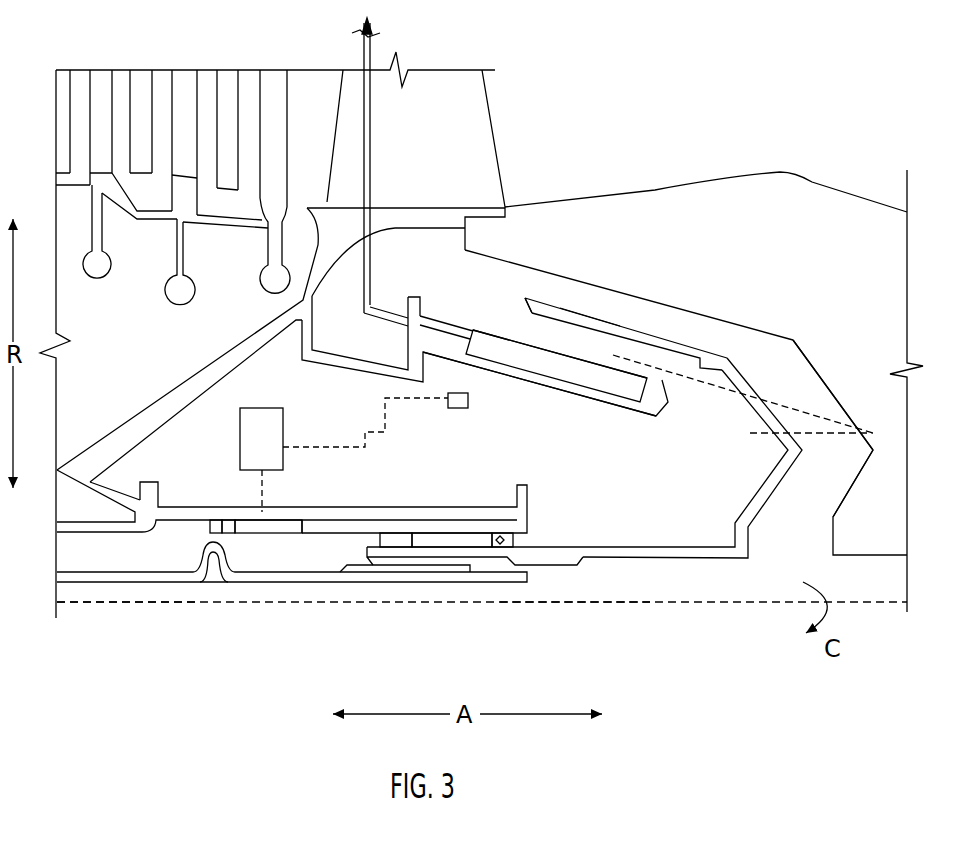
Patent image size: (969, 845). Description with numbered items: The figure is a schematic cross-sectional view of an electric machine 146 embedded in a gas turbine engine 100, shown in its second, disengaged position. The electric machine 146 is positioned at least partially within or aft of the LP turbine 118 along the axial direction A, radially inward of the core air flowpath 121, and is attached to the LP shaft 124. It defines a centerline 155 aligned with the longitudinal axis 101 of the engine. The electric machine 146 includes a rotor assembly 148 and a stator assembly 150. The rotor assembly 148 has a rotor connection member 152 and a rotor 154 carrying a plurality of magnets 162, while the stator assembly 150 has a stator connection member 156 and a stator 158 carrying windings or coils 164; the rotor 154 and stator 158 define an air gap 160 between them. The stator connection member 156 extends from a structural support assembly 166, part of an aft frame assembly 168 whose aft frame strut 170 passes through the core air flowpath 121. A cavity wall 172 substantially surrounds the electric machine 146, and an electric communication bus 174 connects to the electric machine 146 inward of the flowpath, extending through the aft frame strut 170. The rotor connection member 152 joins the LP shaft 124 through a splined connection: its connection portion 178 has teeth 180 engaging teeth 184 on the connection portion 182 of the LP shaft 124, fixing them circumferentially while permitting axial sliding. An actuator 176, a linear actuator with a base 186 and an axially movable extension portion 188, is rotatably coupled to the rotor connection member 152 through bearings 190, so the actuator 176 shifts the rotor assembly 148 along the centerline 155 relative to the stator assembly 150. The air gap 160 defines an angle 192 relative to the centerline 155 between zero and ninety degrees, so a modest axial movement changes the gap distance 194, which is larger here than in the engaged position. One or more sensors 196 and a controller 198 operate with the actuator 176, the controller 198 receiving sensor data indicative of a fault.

The gas turbine engine section 100 is at (614, 74).
The longitudinal axis 101 is at (167, 604).
The LP turbine 118 is at (206, 66).
The core air flowpath 121 is at (568, 165).
The LP shaft 124 is at (105, 583).
The electric machine 146 is at (720, 311).
The rotor assembly 148 is at (796, 369).
The stator assembly 150 is at (509, 420).
The rotor connection member 152 is at (755, 522).
The rotor 154 is at (627, 327).
The centerline 155 is at (580, 605).
The stator connection member 156 is at (352, 372).
The stator 158 is at (610, 405).
The air gap 160 is at (529, 330).
The magnets 162 is at (660, 355).
The windings or coils 164 is at (543, 363).
The structural support assembly 166 is at (205, 378).
The aft frame assembly 168 is at (249, 288).
The aft frame strut 170 is at (443, 136).
The cavity wall 172 is at (840, 400).
The electric communication bus 174 is at (371, 284).
The actuator 176 is at (283, 547).
The connection portion 178 is at (428, 539).
The teeth 180 is at (457, 563).
The connection portion 182 is at (417, 590).
The teeth 184 is at (377, 570).
The base 186 is at (268, 522).
The extension portion 188 is at (408, 523).
The bearings 190 is at (390, 535).
The angle 192 is at (808, 430).
The distance 194 is at (578, 348).
The sensors 196 is at (468, 400).
The controller 198 is at (240, 428).